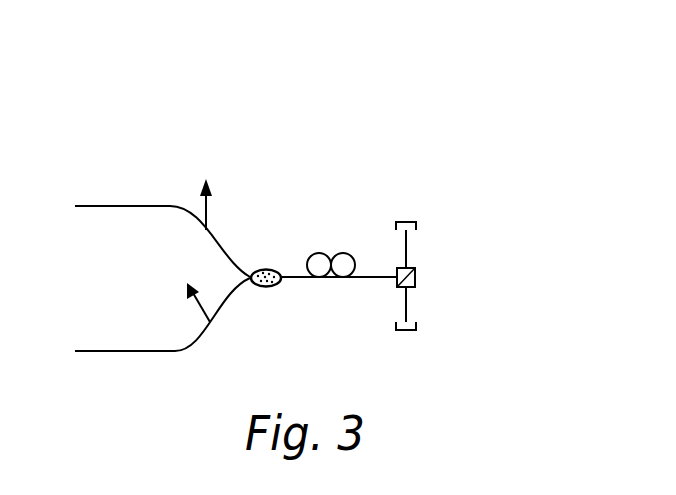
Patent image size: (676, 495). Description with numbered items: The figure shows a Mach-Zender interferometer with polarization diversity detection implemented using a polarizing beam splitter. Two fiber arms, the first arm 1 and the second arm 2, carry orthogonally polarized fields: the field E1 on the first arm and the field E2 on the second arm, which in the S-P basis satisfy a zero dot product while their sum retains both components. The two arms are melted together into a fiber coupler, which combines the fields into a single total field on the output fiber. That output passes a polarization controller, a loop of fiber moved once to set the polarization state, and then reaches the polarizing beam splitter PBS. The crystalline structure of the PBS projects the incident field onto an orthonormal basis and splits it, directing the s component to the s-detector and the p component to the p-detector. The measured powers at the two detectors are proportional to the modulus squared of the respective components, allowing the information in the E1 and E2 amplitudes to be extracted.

The arm1 1 is at (160, 241).
The arm2 2 is at (160, 314).
The field E1 is at (221, 206).
The field E2 is at (187, 307).
The element coupler is at (324, 278).
The polarizing beam splitter PBS is at (441, 277).
The S detector s-detector is at (471, 240).
The P detector p-detector is at (474, 311).